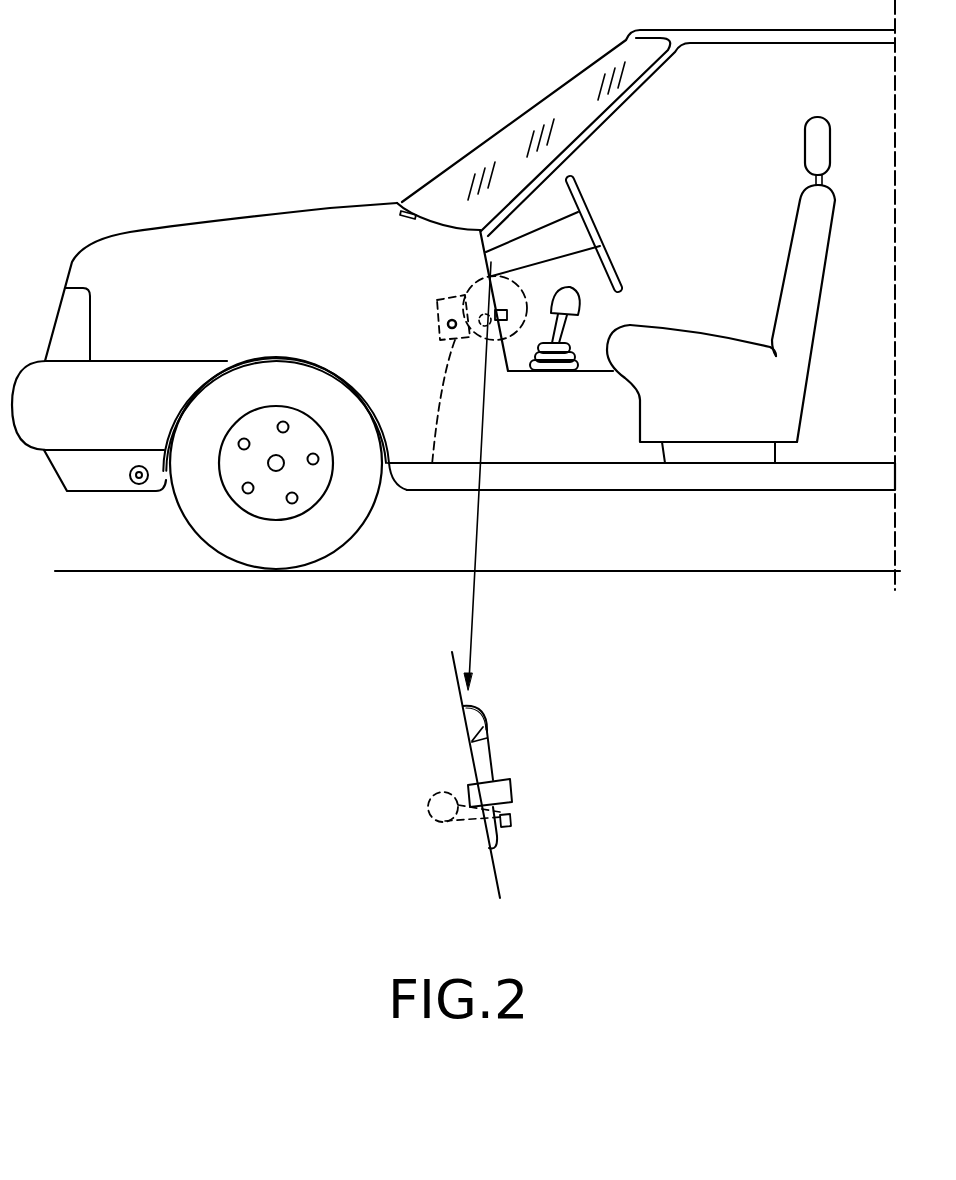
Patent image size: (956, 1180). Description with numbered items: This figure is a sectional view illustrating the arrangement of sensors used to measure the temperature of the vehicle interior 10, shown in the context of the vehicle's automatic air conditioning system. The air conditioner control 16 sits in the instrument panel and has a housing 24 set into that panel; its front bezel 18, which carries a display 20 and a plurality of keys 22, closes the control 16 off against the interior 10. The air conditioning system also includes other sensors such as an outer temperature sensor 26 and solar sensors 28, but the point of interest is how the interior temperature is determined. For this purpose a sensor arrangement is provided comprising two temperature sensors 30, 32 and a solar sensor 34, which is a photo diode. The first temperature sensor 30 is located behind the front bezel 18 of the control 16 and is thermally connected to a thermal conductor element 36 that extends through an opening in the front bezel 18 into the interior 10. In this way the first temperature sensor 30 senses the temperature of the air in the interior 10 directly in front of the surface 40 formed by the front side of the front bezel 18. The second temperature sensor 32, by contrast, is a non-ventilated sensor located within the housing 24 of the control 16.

The interior 10 is at (758, 135).
The air conditioner control 16 is at (431, 288).
The front bezel 18 is at (505, 277).
The display 20 is at (510, 298).
The keys 22 is at (511, 824).
The housing 24 is at (435, 310).
The outer temperature sensor 26 is at (140, 467).
The solar sensors 28 is at (408, 210).
The first temperature sensor 30 is at (429, 812).
The second temperature sensor 32 is at (447, 329).
The solar sensor 34 is at (506, 790).
The thermal conductor element 36 is at (511, 816).
The surface 40 is at (490, 758).